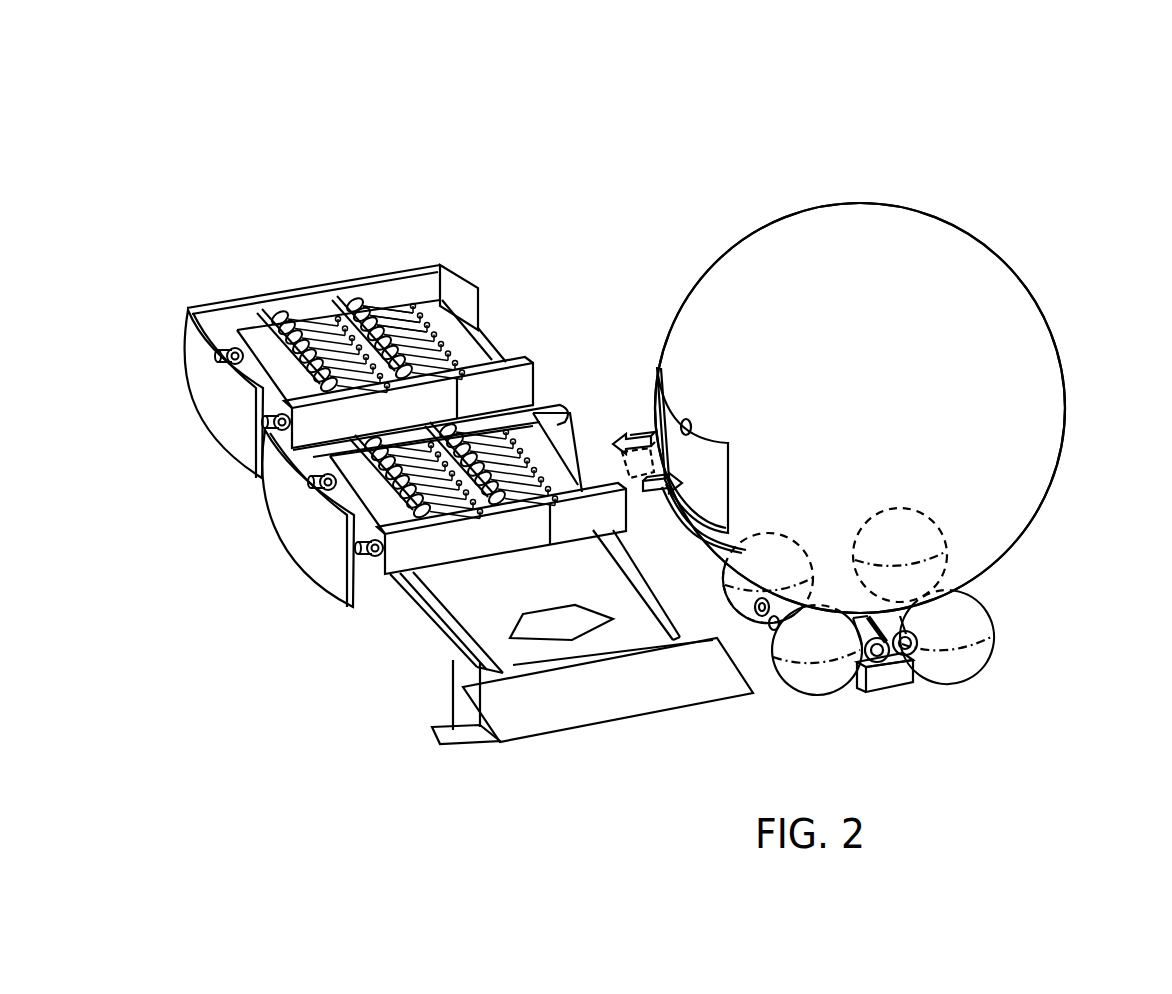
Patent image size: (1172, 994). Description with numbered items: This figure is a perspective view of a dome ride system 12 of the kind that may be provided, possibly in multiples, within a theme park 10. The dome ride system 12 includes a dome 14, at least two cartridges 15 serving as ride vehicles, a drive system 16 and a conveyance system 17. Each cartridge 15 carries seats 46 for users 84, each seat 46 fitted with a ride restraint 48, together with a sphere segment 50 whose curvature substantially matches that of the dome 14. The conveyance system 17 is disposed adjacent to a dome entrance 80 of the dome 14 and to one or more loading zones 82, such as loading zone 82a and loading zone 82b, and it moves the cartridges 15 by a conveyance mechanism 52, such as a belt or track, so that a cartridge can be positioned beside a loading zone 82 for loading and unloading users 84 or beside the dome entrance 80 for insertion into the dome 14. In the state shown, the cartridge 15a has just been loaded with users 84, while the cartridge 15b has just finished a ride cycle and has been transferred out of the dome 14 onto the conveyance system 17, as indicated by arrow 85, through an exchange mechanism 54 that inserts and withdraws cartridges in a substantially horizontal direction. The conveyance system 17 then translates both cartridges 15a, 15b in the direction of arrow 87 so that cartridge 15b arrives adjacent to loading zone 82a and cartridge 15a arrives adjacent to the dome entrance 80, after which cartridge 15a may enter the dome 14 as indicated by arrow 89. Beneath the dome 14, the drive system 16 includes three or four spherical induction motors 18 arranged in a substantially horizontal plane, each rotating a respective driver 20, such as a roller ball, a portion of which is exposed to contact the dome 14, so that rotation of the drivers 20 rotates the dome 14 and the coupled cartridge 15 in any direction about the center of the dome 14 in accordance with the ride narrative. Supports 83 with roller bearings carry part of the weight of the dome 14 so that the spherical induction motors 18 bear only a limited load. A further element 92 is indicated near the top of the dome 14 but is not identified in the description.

The theme park 10 is at (1080, 104).
The dome ride system 12 is at (1030, 152).
The dome 14 is at (1065, 480).
The cartridge 15 is at (398, 397).
The cartridge 15a is at (450, 290).
The cartridge 15b is at (357, 553).
The drive system 16 is at (893, 609).
The conveyance system 17 is at (522, 637).
The spherical induction motor 18 is at (782, 600).
The driver 20 is at (790, 537).
The seat 46 is at (345, 310).
The ride restraint 48 is at (387, 330).
The sphere segment 50 is at (235, 462).
The conveyance mechanism 52 is at (480, 625).
The exchange mechanism 54 is at (623, 467).
The dome entrance 80 is at (690, 433).
The loading zone 82 is at (469, 498).
The loading zone 82a is at (598, 723).
The upper sheet portion 82b is at (225, 305).
The support 83 is at (888, 668).
The users 84 is at (373, 315).
The arrow 85 is at (630, 438).
The arrow 87 is at (537, 640).
The arrow 89 is at (665, 497).
The drum assembly 92 is at (877, 195).